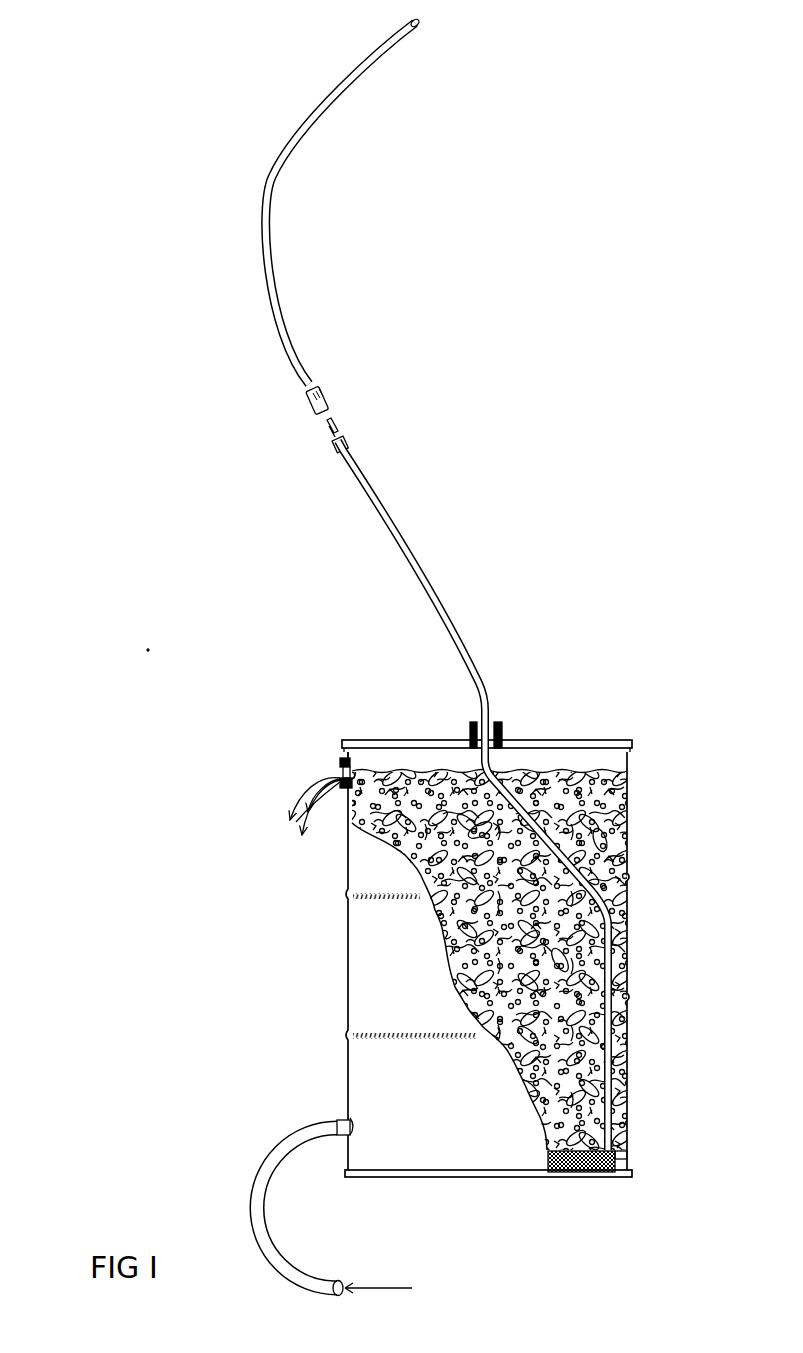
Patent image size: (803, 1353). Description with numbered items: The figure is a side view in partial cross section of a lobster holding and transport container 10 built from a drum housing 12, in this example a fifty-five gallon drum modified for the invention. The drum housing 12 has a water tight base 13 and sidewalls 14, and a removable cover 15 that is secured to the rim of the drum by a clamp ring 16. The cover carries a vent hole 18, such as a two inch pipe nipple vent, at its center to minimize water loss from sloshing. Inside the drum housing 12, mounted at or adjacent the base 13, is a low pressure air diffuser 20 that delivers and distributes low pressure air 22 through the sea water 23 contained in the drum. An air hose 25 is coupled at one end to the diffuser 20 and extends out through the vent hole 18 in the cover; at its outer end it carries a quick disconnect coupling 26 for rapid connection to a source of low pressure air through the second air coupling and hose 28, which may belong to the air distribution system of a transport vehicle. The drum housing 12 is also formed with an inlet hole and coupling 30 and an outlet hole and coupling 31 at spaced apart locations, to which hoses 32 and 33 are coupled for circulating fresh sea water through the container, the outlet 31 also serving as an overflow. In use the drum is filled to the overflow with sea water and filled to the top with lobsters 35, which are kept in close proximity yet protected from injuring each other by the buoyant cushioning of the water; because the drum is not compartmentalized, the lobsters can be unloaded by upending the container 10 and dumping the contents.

The container 10 is at (668, 612).
The drum housing 12 is at (348, 802).
The water tight base 13 is at (618, 1178).
The sidewalls 14 is at (347, 1005).
The removable cover 15 is at (371, 736).
The clamp ring 16 is at (557, 748).
The vent hole 18 is at (500, 730).
The low pressure air diffuser 20 is at (566, 1173).
The low pressure air 22 is at (612, 882).
The sea water 23 is at (612, 770).
The air hose 25 is at (458, 637).
The quick disconnect coupling 26 is at (347, 440).
The second air coupling and hose 28 is at (268, 203).
The inlet hole and coupling 30 is at (345, 1117).
The outlet hole and coupling 31 is at (338, 762).
The hose 32 is at (268, 1218).
The hose 33 is at (314, 789).
The lobsters 35 is at (428, 882).